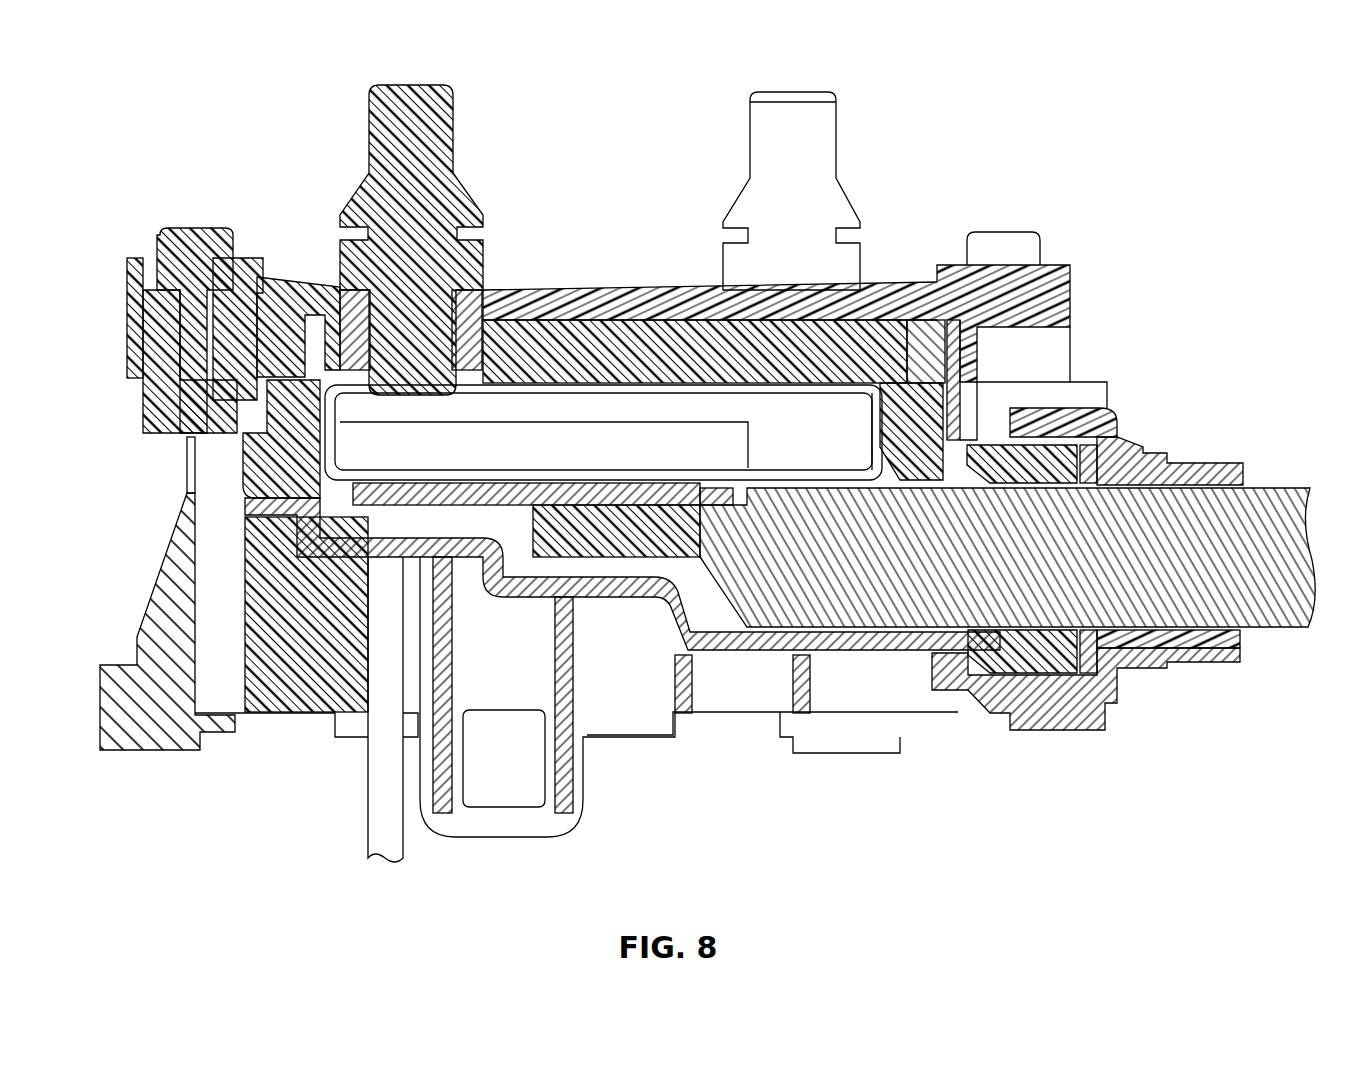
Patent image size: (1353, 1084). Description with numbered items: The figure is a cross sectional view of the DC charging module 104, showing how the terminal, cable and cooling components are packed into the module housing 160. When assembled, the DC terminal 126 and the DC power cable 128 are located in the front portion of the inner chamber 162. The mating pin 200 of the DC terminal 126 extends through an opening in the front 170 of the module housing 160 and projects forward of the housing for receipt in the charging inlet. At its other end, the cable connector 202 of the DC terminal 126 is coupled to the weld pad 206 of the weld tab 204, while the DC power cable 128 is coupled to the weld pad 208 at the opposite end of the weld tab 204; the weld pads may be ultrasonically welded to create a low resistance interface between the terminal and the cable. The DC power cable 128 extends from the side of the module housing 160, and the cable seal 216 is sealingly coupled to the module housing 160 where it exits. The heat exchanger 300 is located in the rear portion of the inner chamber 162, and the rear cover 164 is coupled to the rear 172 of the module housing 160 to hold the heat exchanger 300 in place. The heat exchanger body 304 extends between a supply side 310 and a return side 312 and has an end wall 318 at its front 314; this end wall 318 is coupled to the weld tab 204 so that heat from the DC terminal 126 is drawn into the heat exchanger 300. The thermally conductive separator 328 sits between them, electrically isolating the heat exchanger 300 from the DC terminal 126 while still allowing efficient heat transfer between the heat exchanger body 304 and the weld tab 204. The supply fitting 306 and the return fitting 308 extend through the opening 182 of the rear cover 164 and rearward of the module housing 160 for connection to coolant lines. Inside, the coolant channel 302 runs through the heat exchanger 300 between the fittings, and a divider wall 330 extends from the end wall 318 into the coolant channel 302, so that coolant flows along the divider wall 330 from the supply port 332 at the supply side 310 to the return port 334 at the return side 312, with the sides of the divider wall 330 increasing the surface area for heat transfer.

The DC charging module 104 is at (942, 78).
The DC terminal 126 is at (368, 790).
The DC power cable 128 is at (1292, 620).
The module housing 160 is at (1115, 708).
The inner chamber 162 is at (612, 335).
The rear cover 164 is at (642, 310).
The front 170 is at (738, 712).
The rear 172 is at (962, 300).
The opening 182 is at (486, 291).
The mating pin 200 is at (365, 838).
The cable connector 202 is at (431, 720).
The weld tab 204 is at (575, 600).
The weld pad 206 is at (292, 690).
The weld pad 208 is at (645, 487).
The cable seal 216 is at (1112, 424).
The heat exchanger 300 is at (962, 400).
The coolant channel 302 is at (790, 405).
The heat exchanger body 304 is at (878, 472).
The supply fitting 306 is at (376, 152).
The return fitting 308 is at (768, 140).
The supply side 310 is at (320, 455).
The return side 312 is at (922, 440).
The front 314 is at (607, 495).
The end wall 318 is at (830, 480).
The thermally conductive separator 328 is at (782, 482).
The divider wall 330 is at (665, 440).
The supply port 332 is at (258, 468).
The return port 334 is at (1043, 300).